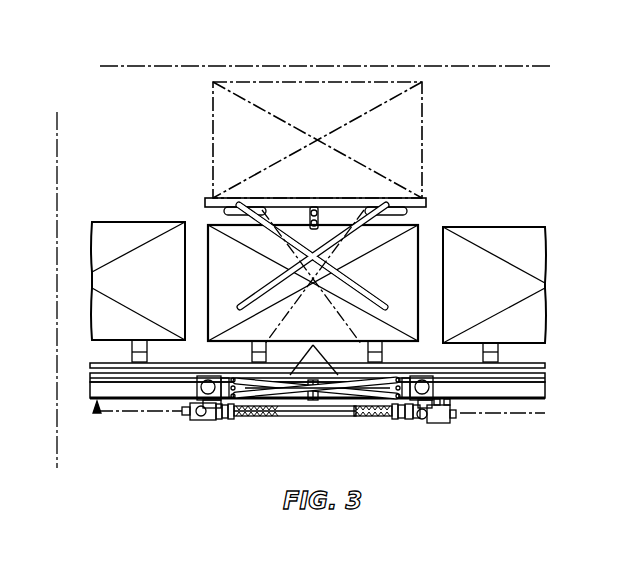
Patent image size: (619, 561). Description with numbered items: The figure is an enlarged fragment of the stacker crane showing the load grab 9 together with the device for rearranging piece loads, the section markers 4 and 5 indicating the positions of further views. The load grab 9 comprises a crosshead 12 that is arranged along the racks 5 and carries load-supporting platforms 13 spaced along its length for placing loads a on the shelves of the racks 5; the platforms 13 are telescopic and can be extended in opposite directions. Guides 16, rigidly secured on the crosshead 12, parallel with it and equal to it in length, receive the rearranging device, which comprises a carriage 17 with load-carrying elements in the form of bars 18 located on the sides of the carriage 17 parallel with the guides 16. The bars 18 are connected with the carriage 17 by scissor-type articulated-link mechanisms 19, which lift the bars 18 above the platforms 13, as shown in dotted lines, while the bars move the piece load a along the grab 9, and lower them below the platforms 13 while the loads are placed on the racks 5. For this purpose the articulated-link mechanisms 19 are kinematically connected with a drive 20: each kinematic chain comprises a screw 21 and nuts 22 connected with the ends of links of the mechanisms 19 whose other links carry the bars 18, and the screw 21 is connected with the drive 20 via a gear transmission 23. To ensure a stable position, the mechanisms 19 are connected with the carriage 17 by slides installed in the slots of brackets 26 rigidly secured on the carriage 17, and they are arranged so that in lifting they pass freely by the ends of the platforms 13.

The load a is at (418, 262).
The section line 4- 4 is at (57, 106).
The rack 5 is at (93, 84).
The load grab 9 is at (97, 413).
The crosshead 12 is at (540, 374).
The load-supporting platform 13 is at (500, 353).
The guide 16 is at (530, 390).
The carriage 17 is at (443, 418).
The bar 18 is at (405, 374).
The scissor-type articulated-link mechanism 19 is at (250, 296).
The drive 20 is at (452, 403).
The screw 21 is at (278, 417).
The nut 22 is at (232, 412).
The gear transmission 23 is at (417, 417).
The bracket 26 is at (313, 345).